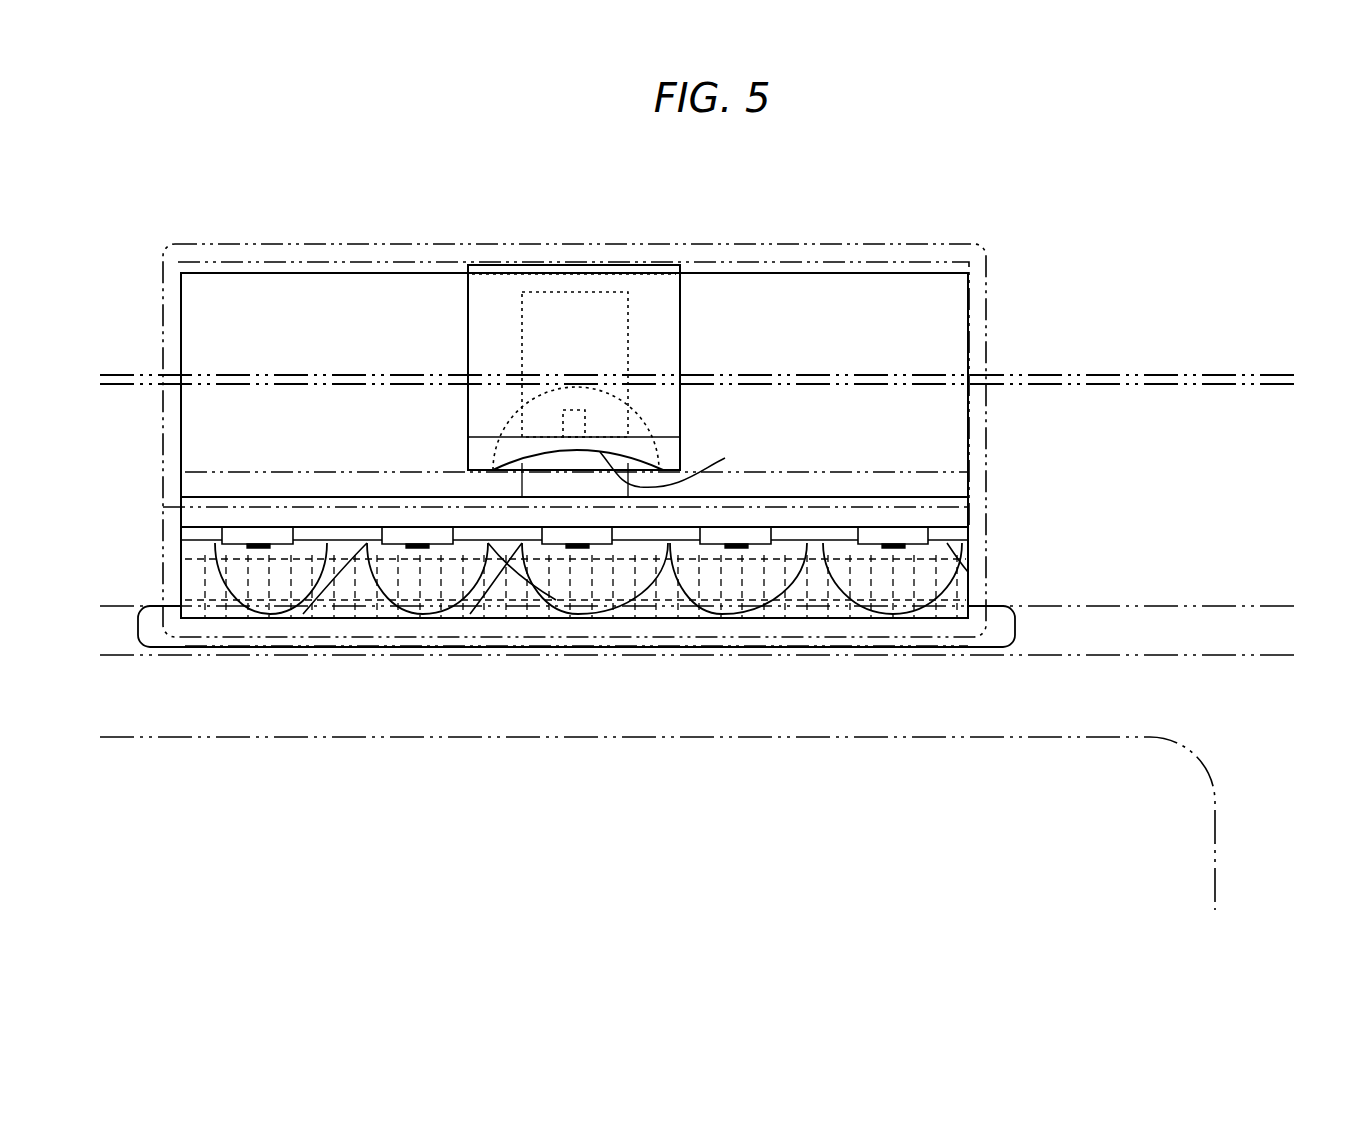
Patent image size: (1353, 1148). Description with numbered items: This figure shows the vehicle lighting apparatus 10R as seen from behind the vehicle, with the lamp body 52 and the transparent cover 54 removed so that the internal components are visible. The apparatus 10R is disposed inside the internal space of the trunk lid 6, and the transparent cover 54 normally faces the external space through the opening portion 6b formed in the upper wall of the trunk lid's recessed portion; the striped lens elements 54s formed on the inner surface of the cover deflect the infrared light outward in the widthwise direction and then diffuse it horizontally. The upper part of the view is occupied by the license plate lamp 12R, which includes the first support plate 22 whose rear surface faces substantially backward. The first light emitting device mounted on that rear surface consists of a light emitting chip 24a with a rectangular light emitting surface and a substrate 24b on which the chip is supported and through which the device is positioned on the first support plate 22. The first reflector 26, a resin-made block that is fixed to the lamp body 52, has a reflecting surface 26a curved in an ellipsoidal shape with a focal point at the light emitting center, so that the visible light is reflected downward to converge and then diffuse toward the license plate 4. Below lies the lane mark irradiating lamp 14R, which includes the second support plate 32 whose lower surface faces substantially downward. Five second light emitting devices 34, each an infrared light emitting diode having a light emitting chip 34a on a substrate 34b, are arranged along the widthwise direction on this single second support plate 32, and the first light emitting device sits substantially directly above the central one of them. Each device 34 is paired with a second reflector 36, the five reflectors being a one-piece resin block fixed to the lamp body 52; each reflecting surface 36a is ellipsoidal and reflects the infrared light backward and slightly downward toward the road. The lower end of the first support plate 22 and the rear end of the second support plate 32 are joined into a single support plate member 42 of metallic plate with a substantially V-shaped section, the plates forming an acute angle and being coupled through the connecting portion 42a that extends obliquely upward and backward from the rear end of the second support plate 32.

The license plate 4 is at (1052, 740).
The trunk lid 6 is at (1220, 660).
The opening portion 6b is at (1012, 638).
The vehicle lighting apparatus 10R is at (1028, 210).
The license plate lamp 12R is at (702, 343).
The lane mark irradiating lamp 14R is at (734, 632).
The first support plate 22 is at (945, 417).
The light emitting chip 24a is at (585, 412).
The substrate 24b is at (628, 320).
The first reflector 26 is at (464, 322).
The reflecting surface 26a is at (687, 464).
The second support plate 32 is at (948, 550).
The second light emitting device 34 is at (255, 553).
The light emitting chip 34a is at (412, 538).
The substrate 34b is at (395, 538).
The second reflector 36 is at (872, 600).
The reflecting surface 36a is at (457, 573).
The support plate member 42 is at (1107, 422).
The module surface 42a is at (952, 520).
The lamp body 52 is at (387, 242).
The transparent cover 54 is at (455, 652).
The striped lens elements 54s is at (758, 588).